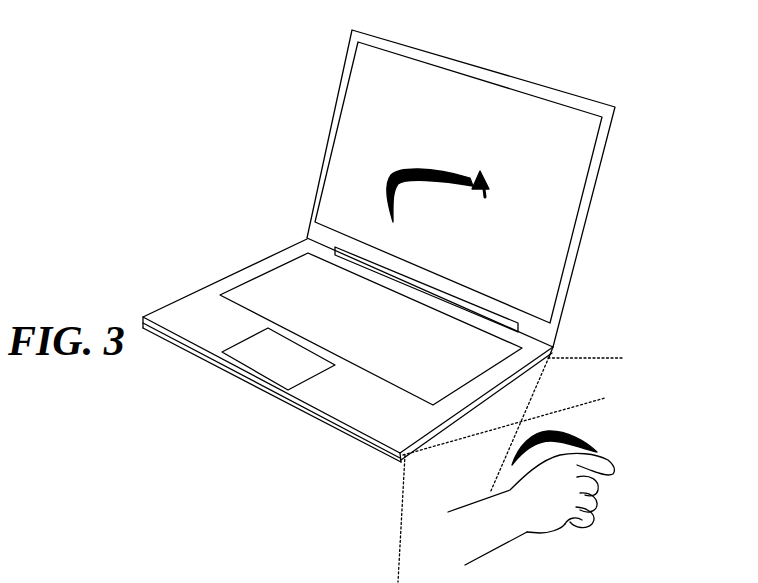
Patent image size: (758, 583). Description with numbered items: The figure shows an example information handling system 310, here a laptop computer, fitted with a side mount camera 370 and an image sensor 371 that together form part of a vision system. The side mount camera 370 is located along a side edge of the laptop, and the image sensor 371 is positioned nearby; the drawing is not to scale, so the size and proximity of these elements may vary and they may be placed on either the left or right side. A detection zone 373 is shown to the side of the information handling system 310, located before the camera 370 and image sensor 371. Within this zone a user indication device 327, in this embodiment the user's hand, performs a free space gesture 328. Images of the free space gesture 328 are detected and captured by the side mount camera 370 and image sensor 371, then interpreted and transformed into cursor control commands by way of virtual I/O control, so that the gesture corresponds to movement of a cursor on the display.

The information handling system 310 is at (258, 161).
The free space gesture 328 is at (432, 162).
The side mount camera 370 is at (553, 345).
The image sensor 371 is at (400, 457).
The detection zone 373 is at (625, 358).
The user indication device 327 is at (540, 520).